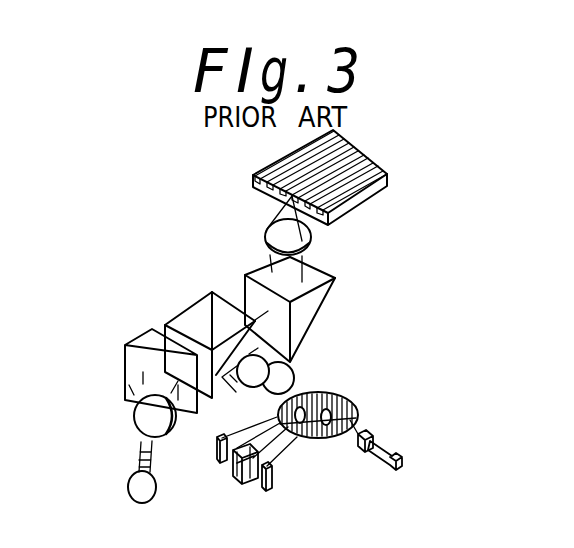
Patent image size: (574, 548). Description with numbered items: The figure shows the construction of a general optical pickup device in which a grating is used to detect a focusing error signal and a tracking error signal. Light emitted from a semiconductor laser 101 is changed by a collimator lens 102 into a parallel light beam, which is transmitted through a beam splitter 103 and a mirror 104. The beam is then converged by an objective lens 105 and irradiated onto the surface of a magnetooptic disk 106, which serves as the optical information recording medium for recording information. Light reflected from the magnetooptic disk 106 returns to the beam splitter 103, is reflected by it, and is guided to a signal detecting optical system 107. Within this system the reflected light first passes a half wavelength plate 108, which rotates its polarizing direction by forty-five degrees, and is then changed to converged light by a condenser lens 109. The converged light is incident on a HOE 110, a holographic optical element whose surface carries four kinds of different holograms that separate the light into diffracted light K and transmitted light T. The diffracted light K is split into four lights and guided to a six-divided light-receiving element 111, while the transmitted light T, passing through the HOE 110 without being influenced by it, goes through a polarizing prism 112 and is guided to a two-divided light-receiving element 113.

The semiconductor laser 101 is at (128, 481).
The collimator lens 102 is at (135, 415).
The beam splitter 103 is at (185, 305).
The mirror 104 is at (333, 290).
The objective lens 105 is at (265, 236).
The magnetooptic disk 106 is at (392, 188).
The signal detecting optical system 107 is at (320, 372).
The half wavelength plate 108 is at (307, 337).
The condenser lens 109 is at (202, 455).
The HOE (Holographic Optical Element) 110 is at (358, 402).
The six-divided light-receiving element 111 is at (237, 475).
The polarizing prism 112 is at (362, 454).
The two-divided light-receiving element 113 is at (403, 466).
The transmitted light T is at (360, 426).
The diffracted light K is at (287, 452).